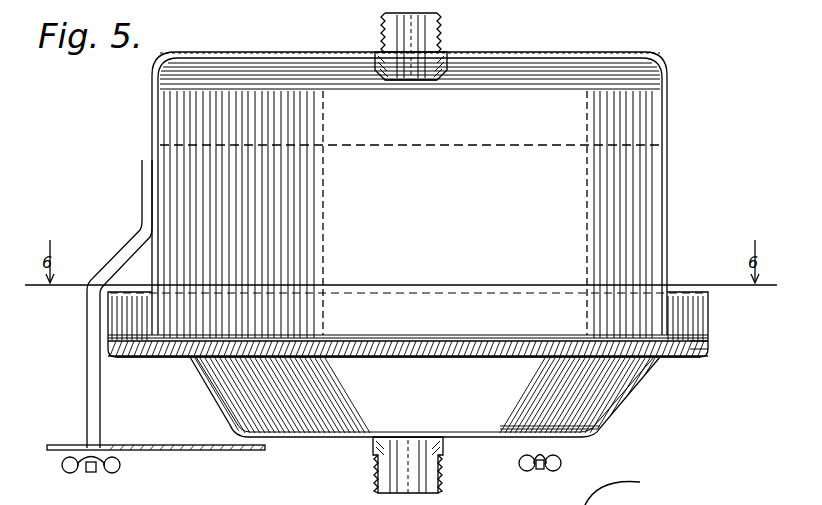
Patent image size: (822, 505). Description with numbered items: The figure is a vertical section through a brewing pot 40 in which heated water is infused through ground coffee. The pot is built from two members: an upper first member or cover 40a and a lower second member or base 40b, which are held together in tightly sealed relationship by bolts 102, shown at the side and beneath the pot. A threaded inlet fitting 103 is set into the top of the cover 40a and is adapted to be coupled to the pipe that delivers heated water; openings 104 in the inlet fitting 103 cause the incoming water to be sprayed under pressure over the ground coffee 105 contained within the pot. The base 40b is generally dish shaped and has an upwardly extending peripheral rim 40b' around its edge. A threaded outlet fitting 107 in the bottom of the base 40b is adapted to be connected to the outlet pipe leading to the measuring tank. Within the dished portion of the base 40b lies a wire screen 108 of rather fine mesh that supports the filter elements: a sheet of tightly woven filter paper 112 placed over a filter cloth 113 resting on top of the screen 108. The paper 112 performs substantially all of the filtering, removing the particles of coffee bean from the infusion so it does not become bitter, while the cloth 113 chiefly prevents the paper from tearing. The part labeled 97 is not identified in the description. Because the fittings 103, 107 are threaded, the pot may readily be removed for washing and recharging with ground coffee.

The brewing pot 40 is at (150, 125).
The cover 40a is at (663, 66).
The base 40b is at (431, 397).
The peripheral rim 40b' is at (438, 324).
The gasket 97 is at (712, 338).
The bolts 102 is at (85, 383).
The threaded inlet fitting 103 is at (442, 23).
The openings 104 is at (442, 70).
The ground coffee 105 is at (410, 250).
The threaded outlet fitting 107 is at (380, 463).
The wire screen 108 is at (543, 360).
The filter paper 112 is at (428, 343).
The filter cloth 113 is at (467, 357).